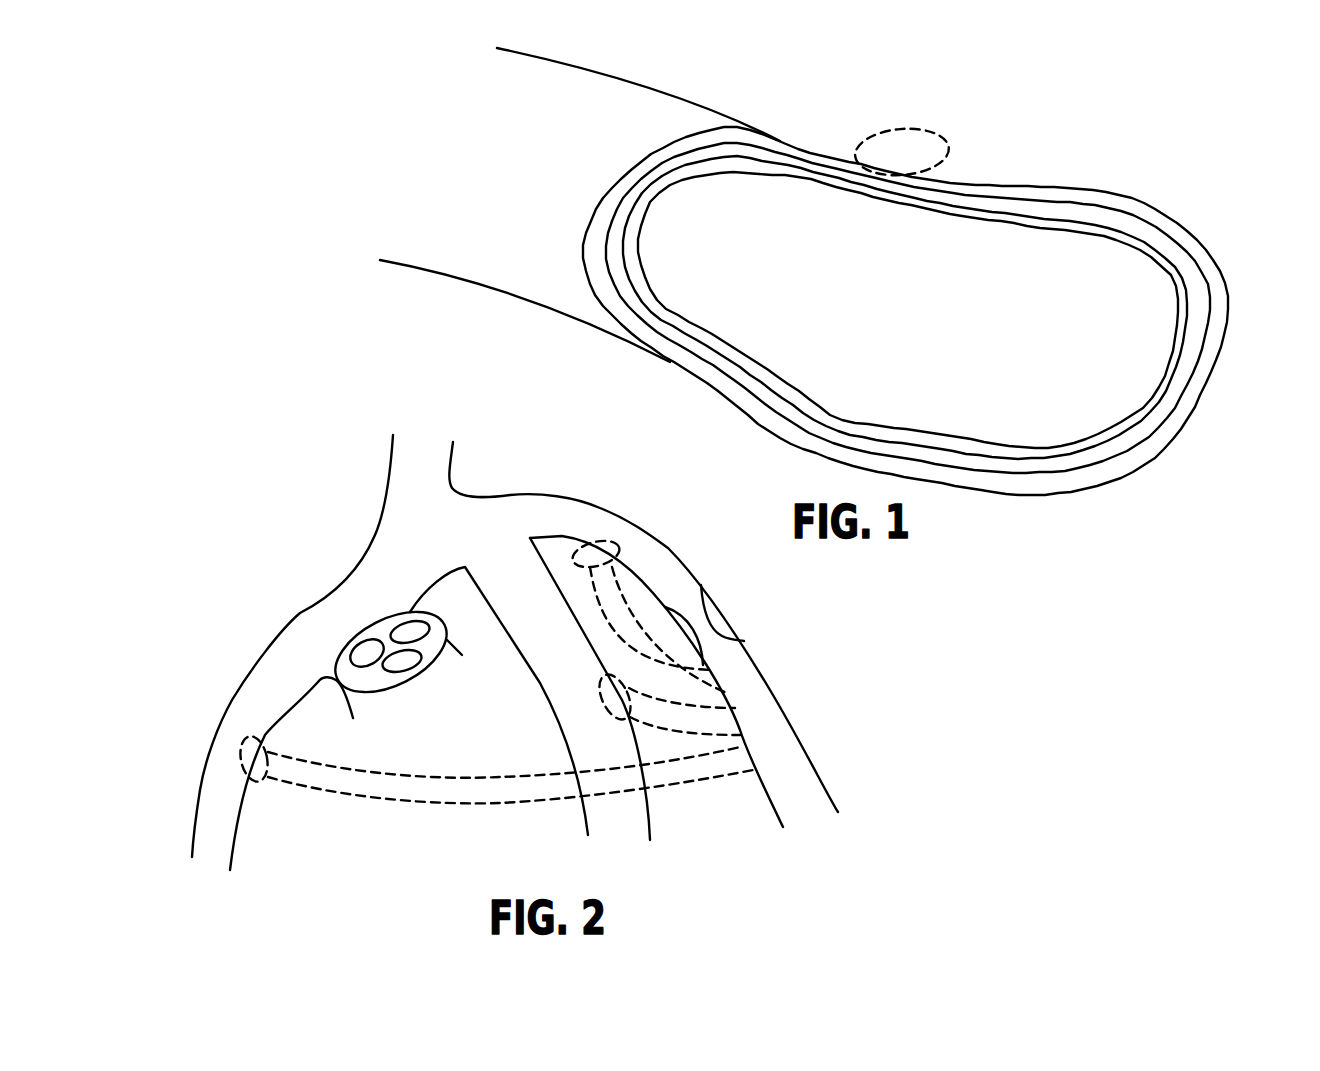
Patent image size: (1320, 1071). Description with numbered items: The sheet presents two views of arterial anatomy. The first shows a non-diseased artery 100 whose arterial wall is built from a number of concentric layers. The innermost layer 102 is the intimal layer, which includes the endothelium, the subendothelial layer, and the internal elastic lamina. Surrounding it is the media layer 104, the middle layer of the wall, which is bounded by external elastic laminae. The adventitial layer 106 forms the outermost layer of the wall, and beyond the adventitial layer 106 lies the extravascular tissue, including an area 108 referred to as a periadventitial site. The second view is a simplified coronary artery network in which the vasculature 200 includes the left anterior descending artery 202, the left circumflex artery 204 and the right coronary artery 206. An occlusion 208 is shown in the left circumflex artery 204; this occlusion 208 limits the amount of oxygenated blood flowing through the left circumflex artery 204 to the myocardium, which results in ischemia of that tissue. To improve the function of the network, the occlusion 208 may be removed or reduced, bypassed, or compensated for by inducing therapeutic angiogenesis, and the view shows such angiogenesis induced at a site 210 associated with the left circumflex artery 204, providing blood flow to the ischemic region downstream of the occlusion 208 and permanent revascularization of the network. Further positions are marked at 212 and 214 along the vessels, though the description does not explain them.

In FIG. 1, the artery 100 is at (1115, 75).
In FIG. 1, the innermost layer 102 is at (1173, 351).
In FIG. 1, the media layer 104 is at (1183, 249).
In FIG. 1, the adventitial layer 106 is at (1140, 204).
In FIG. 1, the area 108 is at (921, 146).
In FIG. 2, the vasculature 200 is at (614, 442).
In FIG. 2, the left anterior descending artery 202 is at (553, 664).
In FIG. 2, the left circumflex artery 204 is at (797, 767).
In FIG. 2, the right coronary artery 206 is at (314, 620).
In FIG. 2, the occlusion 208 is at (718, 644).
In FIG. 2, the site 210 is at (616, 548).
In FIG. 2, the catheter intermediate position 212 is at (602, 703).
In FIG. 2, the catheter entry position 214 is at (240, 749).